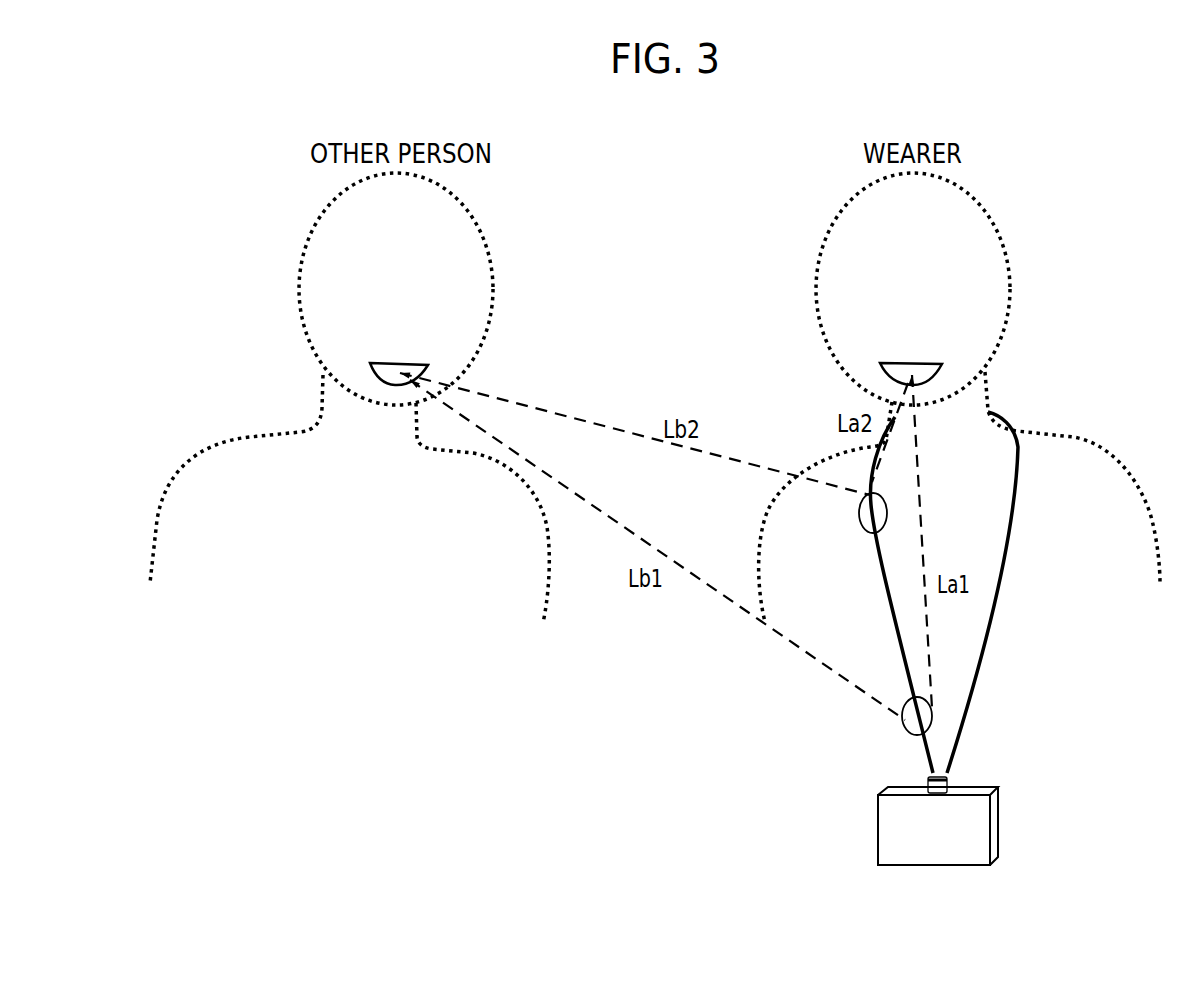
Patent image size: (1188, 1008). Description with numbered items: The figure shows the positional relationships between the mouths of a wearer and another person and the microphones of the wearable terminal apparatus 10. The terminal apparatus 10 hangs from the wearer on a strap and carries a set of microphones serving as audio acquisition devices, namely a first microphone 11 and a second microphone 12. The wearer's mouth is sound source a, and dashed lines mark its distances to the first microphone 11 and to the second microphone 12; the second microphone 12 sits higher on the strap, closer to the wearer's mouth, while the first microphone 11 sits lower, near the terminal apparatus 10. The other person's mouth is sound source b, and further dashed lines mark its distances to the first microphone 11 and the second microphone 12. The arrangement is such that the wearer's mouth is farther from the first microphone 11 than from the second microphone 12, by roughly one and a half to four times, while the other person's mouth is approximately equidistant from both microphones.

The terminal apparatus 10 is at (1022, 823).
The first microphone 11 is at (912, 727).
The second microphone 12 is at (868, 519).